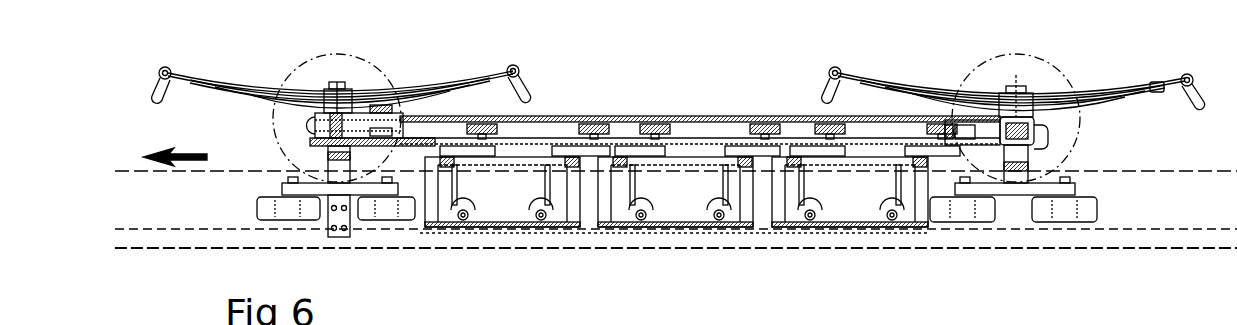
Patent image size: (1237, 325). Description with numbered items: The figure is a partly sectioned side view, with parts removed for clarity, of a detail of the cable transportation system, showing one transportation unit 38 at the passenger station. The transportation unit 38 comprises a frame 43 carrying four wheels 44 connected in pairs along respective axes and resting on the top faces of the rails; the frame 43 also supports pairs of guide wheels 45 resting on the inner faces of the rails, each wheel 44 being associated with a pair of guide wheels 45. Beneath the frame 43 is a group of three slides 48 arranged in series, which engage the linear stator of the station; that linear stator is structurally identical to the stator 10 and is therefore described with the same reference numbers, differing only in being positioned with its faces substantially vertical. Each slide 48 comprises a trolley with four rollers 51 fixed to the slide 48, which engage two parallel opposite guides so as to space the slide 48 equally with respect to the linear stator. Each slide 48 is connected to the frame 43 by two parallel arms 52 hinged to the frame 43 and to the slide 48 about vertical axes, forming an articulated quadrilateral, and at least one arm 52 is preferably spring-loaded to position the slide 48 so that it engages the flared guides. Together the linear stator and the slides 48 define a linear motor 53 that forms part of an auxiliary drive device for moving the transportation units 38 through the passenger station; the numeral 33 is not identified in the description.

The stator 10 is at (1172, 169).
The guide rollers 33 is at (958, 314).
The transportation unit 38 is at (1063, 60).
The frame 43 is at (655, 113).
The wheels 44 is at (395, 80).
The guide wheels 45 is at (272, 212).
The slides 48 is at (501, 203).
The rollers 51 is at (458, 222).
The arms 52 is at (466, 126).
The linear motor 53 is at (600, 255).